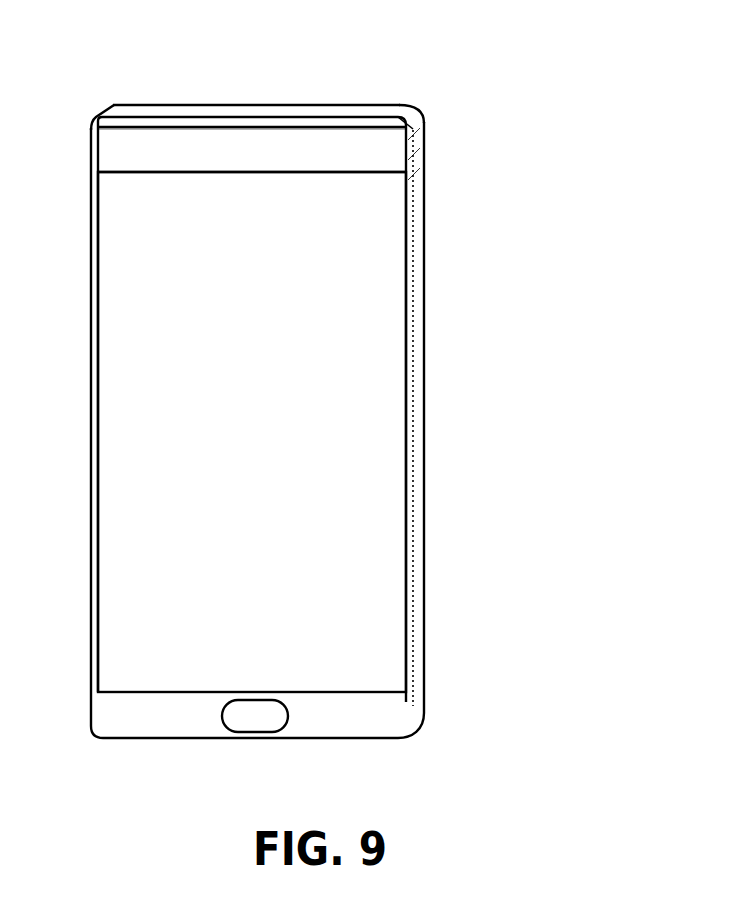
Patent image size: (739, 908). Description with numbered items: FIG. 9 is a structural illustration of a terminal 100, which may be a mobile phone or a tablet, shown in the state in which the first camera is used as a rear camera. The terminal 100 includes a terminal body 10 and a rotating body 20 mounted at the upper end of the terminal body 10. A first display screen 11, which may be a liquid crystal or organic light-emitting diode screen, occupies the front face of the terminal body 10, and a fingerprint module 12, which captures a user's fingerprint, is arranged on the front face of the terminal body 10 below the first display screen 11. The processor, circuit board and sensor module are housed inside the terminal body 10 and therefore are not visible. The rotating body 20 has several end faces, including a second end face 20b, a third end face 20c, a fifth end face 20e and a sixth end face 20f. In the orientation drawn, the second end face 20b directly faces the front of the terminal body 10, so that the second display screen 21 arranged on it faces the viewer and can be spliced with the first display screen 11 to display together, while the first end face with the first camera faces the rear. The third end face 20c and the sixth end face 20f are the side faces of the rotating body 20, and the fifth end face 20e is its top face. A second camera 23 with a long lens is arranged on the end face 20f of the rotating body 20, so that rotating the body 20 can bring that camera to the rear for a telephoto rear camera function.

The terminal 100 is at (530, 213).
The terminal body 10 is at (378, 718).
The first display screen 11 is at (377, 490).
The fingerprint module 12 is at (250, 716).
The rotating body 20 is at (163, 116).
The second end face 20b is at (210, 127).
The third end face 20c is at (96, 120).
The fifth end face 20e is at (377, 105).
The sixth end face 20f is at (418, 128).
The second display screen 21 is at (285, 147).
The second camera 23 is at (427, 148).